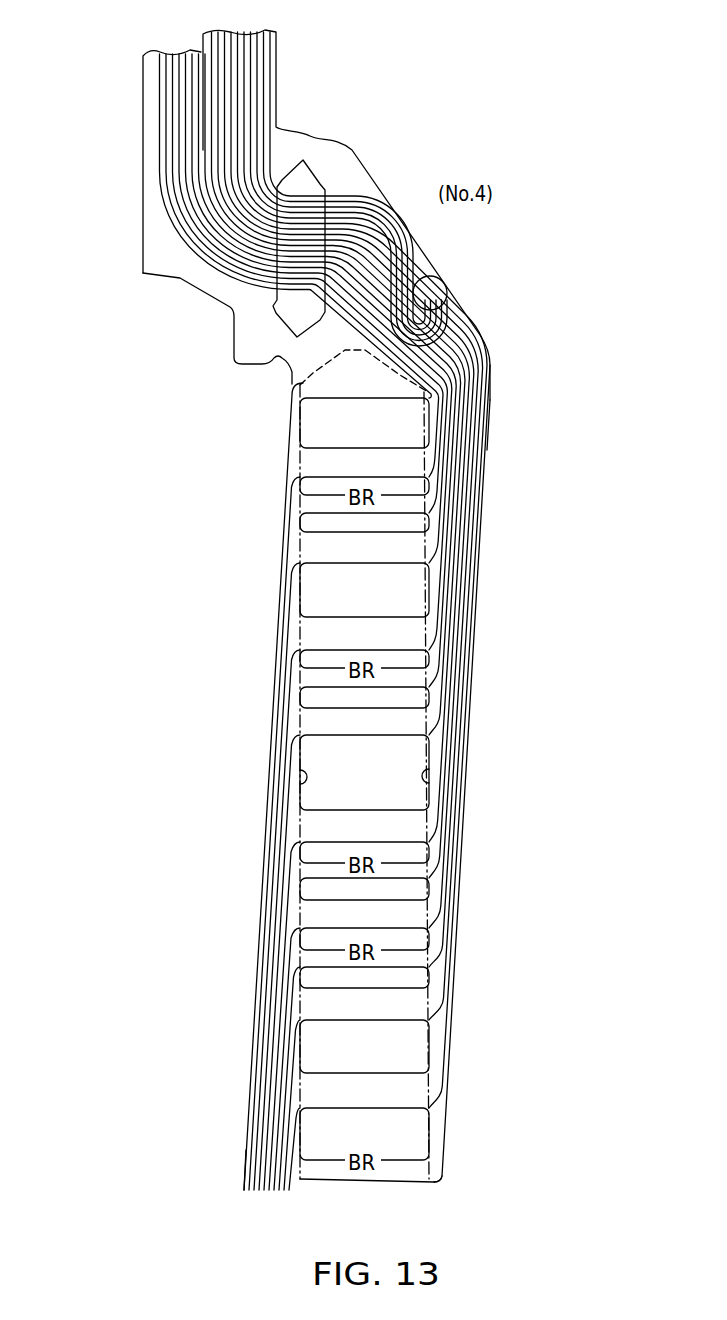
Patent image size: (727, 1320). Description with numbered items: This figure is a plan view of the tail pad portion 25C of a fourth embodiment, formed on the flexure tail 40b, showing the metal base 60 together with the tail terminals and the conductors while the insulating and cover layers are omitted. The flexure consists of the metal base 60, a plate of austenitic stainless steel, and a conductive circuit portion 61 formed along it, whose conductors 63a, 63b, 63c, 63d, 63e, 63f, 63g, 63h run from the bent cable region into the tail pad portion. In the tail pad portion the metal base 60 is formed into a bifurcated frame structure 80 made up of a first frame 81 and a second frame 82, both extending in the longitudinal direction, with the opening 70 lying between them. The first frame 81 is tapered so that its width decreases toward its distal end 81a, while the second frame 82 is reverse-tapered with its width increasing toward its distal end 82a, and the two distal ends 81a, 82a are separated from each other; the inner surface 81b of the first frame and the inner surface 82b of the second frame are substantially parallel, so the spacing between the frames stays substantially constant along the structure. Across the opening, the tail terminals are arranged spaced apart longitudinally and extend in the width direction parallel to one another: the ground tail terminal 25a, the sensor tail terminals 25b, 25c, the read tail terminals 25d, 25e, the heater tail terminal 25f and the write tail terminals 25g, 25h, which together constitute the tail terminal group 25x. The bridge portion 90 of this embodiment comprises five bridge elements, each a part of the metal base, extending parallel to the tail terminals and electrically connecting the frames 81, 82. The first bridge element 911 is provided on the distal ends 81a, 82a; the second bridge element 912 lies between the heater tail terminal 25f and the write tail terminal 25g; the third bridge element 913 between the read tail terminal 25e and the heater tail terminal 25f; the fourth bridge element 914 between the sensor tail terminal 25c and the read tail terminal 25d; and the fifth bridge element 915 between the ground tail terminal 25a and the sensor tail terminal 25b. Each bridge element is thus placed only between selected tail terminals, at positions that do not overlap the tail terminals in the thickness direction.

The metal base 60 is at (357, 172).
The conductive circuit portion 61 is at (276, 152).
The flexure tail 40b is at (444, 248).
The frame structure 80 is at (492, 517).
The first frame 81 is at (476, 688).
The distal end of first frame 81a is at (438, 1184).
The inner surface of first frame 81b is at (422, 775).
The second frame 82 is at (290, 642).
The distal end of second frame 82a is at (246, 1175).
The inner surface of second frame 82b is at (305, 775).
The conductor 63a is at (163, 118).
The conductor 63b is at (172, 143).
The conductor 63c is at (180, 163).
The conductor 63d is at (200, 185).
The conductor 63e is at (220, 206).
The conductor 63f is at (235, 206).
The conductor 63g is at (243, 215).
The conductor 63h is at (252, 225).
The tail terminal group 25x is at (390, 436).
The ground tail terminal 25a is at (407, 465).
The sensor tail terminal 25b is at (407, 551).
The sensor tail terminal 25c is at (405, 637).
The read tail terminal 25d is at (410, 725).
The read tail terminal 25e is at (410, 833).
The heater tail terminal 25f is at (410, 916).
The write tail terminal 25g is at (412, 1002).
The write tail terminal 25h is at (418, 1097).
The tail pad portion 25C is at (224, 748).
The opening 70 is at (337, 599).
The bridge portion 90 is at (359, 983).
The first bridge element 911 is at (413, 1175).
The second bridge element 912 is at (318, 958).
The third bridge element 913 is at (318, 872).
The fourth bridge element 914 is at (318, 681).
The fifth bridge element 915 is at (313, 508).